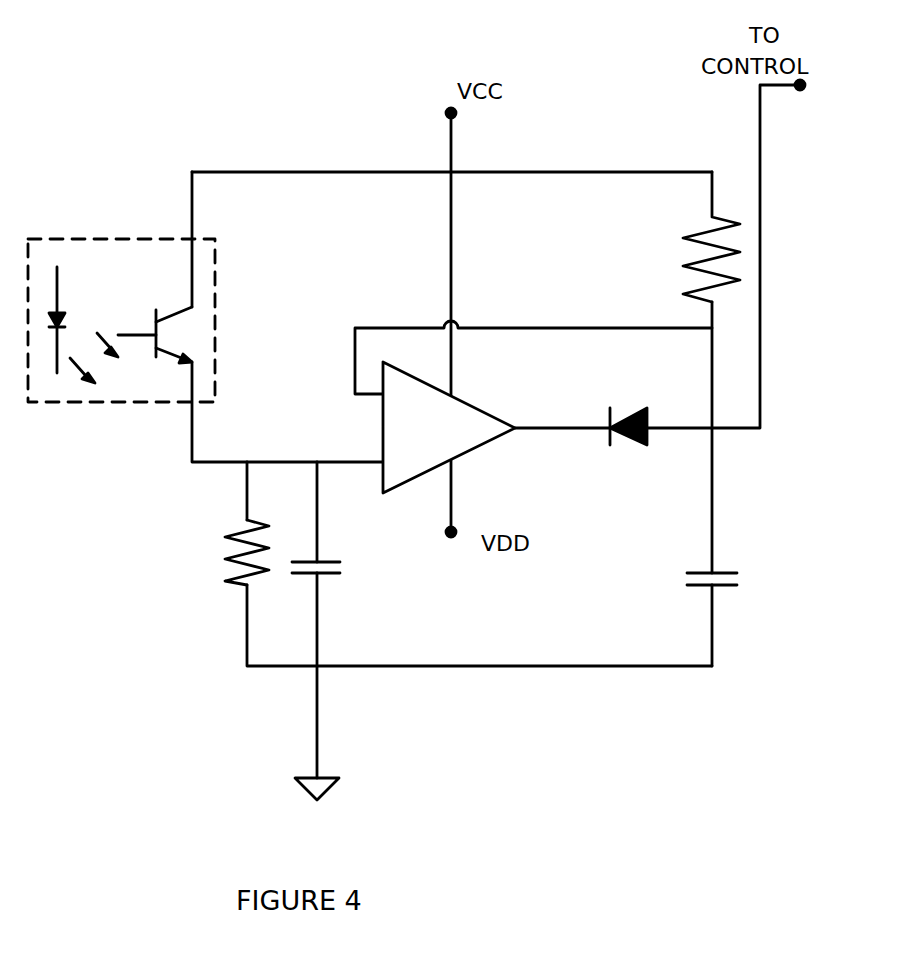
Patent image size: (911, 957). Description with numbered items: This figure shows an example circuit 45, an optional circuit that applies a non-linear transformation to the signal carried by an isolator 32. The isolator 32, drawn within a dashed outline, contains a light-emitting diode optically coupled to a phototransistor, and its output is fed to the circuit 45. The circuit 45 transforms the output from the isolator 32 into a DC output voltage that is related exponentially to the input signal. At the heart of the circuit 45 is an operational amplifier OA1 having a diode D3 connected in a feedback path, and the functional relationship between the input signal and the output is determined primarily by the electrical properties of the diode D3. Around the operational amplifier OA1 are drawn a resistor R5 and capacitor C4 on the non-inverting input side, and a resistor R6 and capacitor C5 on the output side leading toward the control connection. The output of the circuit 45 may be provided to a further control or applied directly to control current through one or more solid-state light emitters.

The circuit 45 is at (135, 78).
The isolator 32 is at (120, 403).
The operational amplifier OA1 is at (473, 455).
The diode D3 is at (628, 442).
The resistor R5 is at (229, 552).
The resistor R6 is at (693, 237).
The capacitor C4 is at (333, 568).
The capacitor C5 is at (729, 578).